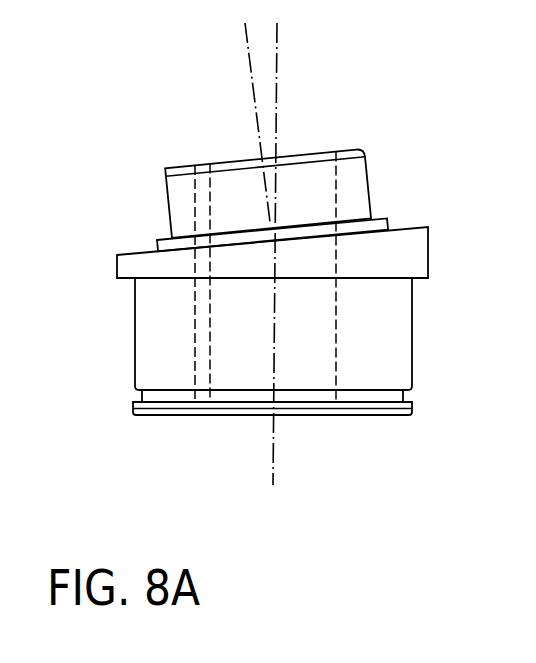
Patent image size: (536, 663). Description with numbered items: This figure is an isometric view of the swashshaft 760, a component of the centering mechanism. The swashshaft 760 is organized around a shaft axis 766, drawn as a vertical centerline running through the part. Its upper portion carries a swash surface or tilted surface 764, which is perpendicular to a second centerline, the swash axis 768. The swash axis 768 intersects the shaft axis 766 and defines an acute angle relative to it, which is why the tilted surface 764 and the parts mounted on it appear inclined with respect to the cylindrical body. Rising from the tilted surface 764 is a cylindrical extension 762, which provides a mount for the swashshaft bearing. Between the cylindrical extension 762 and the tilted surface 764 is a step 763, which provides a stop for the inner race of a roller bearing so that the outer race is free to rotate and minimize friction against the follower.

The swashshaft 760 is at (452, 109).
The cylindrical extension 762 is at (167, 197).
The step 763 is at (160, 240).
The tilted surface 764 is at (413, 227).
The shaft axis 766 is at (280, 37).
The swash axis 768 is at (252, 77).